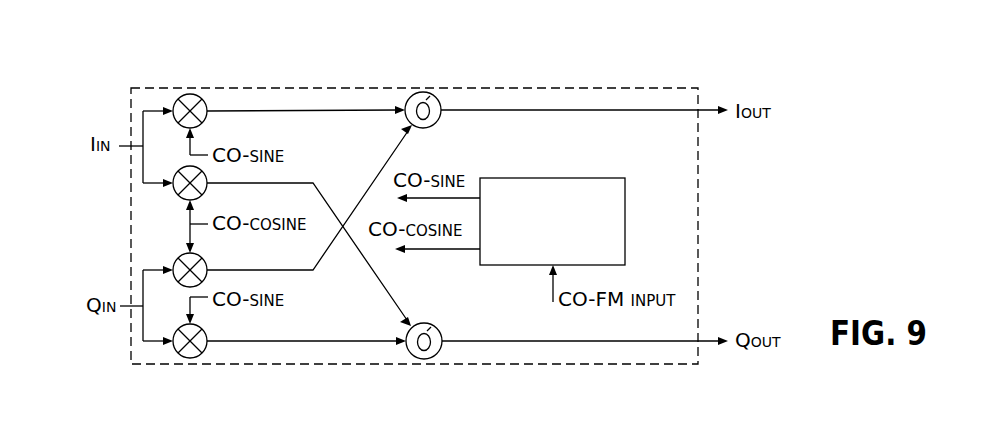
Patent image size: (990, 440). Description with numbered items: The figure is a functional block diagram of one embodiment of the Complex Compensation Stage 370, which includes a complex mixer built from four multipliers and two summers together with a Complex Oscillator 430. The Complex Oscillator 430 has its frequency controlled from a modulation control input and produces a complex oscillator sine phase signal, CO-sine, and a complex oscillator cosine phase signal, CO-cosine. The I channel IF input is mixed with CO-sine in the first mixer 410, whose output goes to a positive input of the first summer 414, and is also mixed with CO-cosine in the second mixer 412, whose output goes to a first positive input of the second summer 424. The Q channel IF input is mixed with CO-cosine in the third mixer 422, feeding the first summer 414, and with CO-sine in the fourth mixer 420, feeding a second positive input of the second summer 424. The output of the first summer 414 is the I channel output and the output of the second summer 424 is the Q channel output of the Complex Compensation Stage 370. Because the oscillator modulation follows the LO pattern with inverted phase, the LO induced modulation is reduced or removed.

The Complex Compensation Stage 370 is at (657, 63).
The first mixer 410 is at (191, 94).
The second mixer 412 is at (184, 199).
The first summer 414 is at (436, 123).
The fourth mixer 420 is at (192, 358).
The third mixer 422 is at (204, 261).
The second summer 424 is at (424, 359).
The Complex Oscillator 430 is at (625, 205).